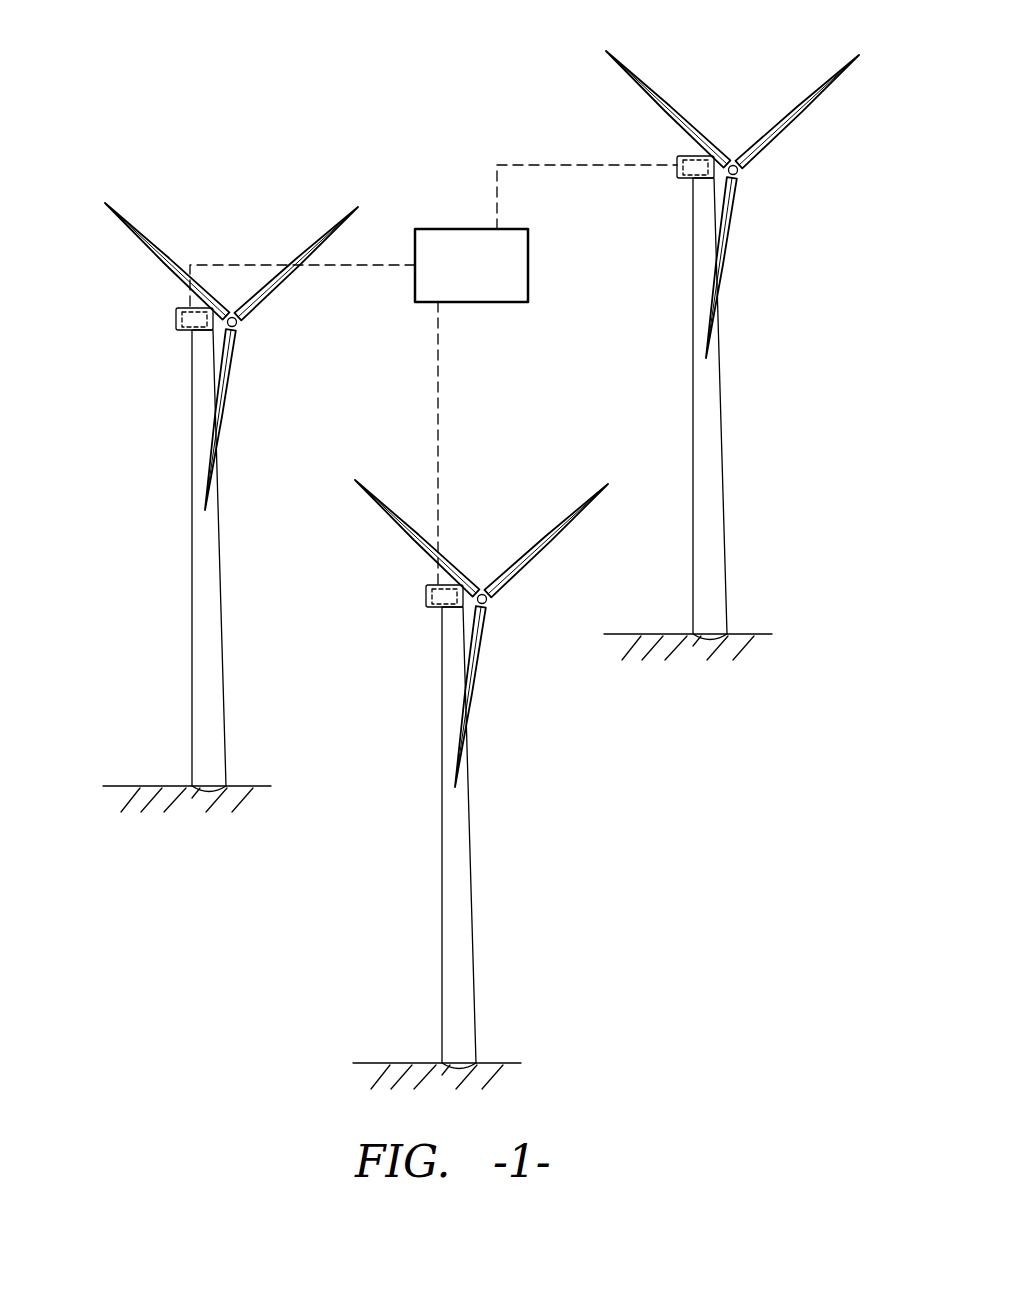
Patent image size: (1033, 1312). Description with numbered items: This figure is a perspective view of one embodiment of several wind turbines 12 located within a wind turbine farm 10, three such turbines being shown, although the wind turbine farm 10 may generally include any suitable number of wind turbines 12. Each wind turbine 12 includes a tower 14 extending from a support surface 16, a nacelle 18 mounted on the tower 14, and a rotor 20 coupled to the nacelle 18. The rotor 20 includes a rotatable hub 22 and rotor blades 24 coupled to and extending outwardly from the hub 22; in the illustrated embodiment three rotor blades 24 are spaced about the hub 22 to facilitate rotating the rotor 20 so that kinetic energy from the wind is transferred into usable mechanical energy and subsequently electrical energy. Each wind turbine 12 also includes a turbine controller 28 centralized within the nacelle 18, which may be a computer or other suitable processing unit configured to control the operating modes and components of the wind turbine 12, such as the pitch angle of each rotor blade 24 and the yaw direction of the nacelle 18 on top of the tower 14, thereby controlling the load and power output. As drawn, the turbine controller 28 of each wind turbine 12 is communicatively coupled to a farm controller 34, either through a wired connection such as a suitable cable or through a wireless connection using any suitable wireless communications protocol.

The wind turbine farm 10 is at (288, 100).
The wind turbine 12 is at (478, 564).
The tower 14 is at (483, 623).
The support surface 16 is at (434, 842).
The nacelle 18 is at (417, 388).
The rotor 20 is at (482, 413).
The rotatable hub 22 is at (523, 398).
The rotor blade 24 is at (482, 413).
The turbine controller 28 is at (414, 403).
The farm controller 34 is at (481, 281).